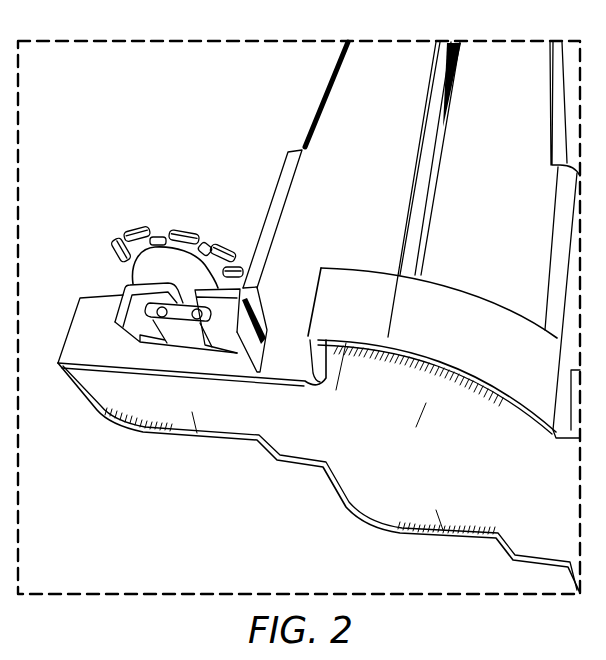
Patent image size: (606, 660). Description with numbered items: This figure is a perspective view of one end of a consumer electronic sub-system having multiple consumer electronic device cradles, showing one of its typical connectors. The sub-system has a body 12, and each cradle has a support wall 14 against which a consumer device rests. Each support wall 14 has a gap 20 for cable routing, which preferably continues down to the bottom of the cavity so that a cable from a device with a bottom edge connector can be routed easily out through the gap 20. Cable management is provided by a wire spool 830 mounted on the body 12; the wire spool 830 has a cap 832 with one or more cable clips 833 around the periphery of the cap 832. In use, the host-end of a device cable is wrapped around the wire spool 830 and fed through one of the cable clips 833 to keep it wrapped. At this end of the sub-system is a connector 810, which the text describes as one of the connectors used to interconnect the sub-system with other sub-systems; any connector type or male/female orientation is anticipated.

The body 12 is at (297, 208).
The support wall 14 is at (353, 96).
The gap 20 is at (453, 43).
The connector 810 is at (185, 310).
The wire spool 830 is at (152, 270).
The cap 832 is at (138, 230).
The cable clips 833 is at (160, 215).